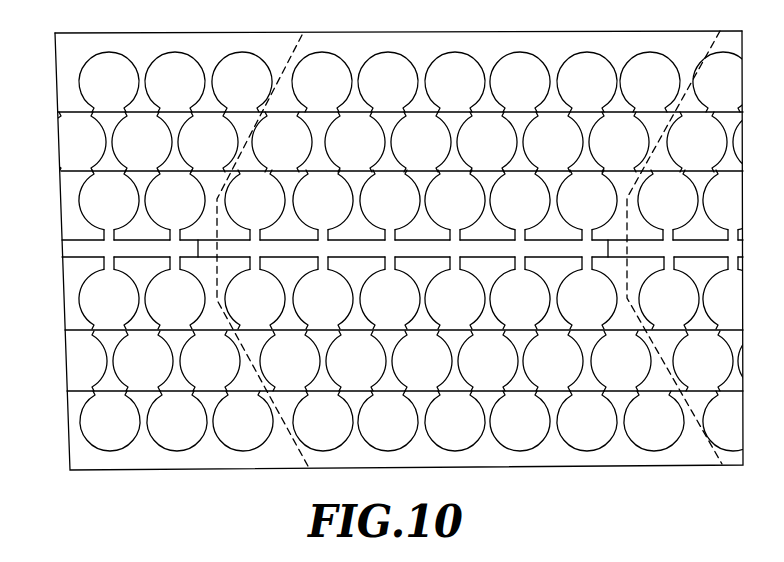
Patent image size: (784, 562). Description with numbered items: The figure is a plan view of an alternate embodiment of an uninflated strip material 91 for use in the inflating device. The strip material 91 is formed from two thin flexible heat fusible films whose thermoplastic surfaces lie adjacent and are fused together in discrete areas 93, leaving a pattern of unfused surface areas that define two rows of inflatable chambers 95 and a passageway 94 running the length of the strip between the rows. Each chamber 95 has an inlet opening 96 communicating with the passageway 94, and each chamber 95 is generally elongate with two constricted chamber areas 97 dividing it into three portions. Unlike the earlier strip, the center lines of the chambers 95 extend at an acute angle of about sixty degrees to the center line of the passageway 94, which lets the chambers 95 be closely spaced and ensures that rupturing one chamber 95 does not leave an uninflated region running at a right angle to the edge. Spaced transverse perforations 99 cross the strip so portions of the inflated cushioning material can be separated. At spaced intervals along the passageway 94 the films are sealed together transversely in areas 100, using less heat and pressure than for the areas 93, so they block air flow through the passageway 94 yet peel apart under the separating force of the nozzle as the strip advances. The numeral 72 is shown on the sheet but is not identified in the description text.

The strip 72 is at (685, 32).
The strip material 91 is at (511, 32).
The discrete fused areas 93 is at (424, 66).
The passageway 94 is at (76, 247).
The inflatable chambers 95 is at (283, 137).
The inlet opening 96 is at (110, 268).
The constricted chamber areas 97 is at (125, 328).
The transverse perforations 99 is at (302, 40).
The peelably sealed areas 100 is at (199, 248).